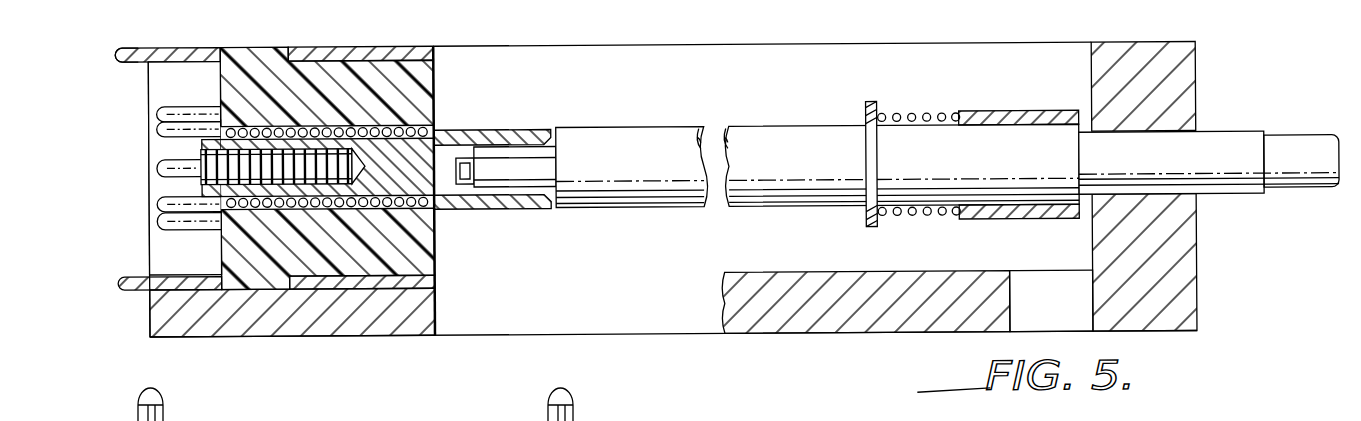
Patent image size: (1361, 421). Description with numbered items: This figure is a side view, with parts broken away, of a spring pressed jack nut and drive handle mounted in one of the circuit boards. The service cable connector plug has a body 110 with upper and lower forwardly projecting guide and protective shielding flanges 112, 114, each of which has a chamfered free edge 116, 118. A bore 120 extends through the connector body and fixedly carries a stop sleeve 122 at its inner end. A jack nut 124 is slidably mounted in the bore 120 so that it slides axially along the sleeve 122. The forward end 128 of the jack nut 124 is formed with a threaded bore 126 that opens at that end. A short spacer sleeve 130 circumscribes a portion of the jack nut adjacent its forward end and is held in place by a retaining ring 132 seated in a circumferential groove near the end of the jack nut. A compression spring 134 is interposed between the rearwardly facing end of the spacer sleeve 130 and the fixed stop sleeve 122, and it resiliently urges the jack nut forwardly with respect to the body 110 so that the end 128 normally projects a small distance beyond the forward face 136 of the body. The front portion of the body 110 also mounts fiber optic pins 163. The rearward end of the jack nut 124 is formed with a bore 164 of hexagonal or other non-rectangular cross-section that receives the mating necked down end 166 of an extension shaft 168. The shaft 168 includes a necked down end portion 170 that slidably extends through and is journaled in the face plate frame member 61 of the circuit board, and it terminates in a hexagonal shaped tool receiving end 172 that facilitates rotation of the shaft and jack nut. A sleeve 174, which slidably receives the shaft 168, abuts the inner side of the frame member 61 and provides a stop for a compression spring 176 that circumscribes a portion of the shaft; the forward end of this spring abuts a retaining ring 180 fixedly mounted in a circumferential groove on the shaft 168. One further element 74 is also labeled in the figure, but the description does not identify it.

The face plate frame member 61 is at (1217, 80).
The housing member 74 is at (447, 68).
The body 110 is at (353, 58).
The upper guide and protective shielding flange 112 is at (186, 50).
The lower guide and protective shielding flange 114 is at (173, 293).
The chamfered free edge 116 is at (141, 55).
The chamfered free edge 118 is at (132, 283).
The bore 120 is at (339, 129).
The stop sleeve 122 is at (436, 115).
The jack nut 124 is at (499, 216).
The threaded bore 126 is at (319, 186).
The forward end 128 is at (203, 181).
The spacer sleeve 130 is at (231, 210).
The retaining ring 132 is at (217, 128).
The compression spring 134 is at (311, 132).
The forward face 136 is at (222, 250).
The fiber optic pins 163 is at (153, 129).
The bore 164 is at (461, 208).
The necked down end 166 is at (522, 151).
The extension shaft 168 is at (705, 128).
The necked down end portion 170 is at (1222, 138).
The tool receiving end 172 is at (1298, 138).
The sleeve 174 is at (1006, 115).
The compression spring 176 is at (914, 118).
The retaining ring 180 is at (867, 105).